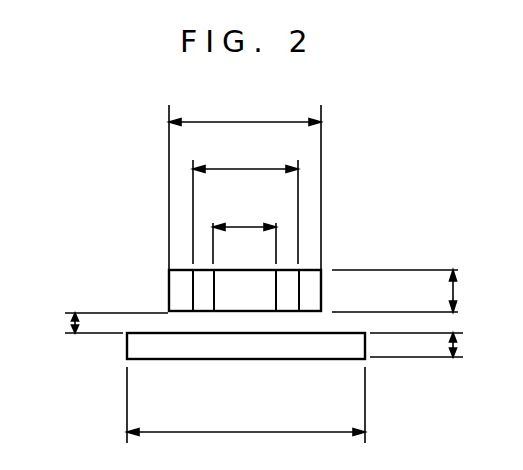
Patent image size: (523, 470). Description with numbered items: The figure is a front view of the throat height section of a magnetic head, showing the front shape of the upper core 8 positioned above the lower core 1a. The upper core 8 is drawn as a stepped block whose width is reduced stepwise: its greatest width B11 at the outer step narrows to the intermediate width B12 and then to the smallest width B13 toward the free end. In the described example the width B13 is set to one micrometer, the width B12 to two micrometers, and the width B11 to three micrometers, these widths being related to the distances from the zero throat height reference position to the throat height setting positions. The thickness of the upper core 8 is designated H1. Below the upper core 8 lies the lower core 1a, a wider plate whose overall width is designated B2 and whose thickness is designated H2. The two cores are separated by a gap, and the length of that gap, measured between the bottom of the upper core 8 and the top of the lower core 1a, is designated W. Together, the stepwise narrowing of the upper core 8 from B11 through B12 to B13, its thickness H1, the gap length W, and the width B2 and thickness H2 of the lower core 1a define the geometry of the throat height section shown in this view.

The upper core 8 is at (308, 281).
The lower core 1a is at (337, 351).
The width of the upper core B11 is at (245, 183).
The width of the upper core B12 is at (245, 205).
The width of the upper core B13 is at (244, 233).
The thickness of the upper core H1 is at (395, 291).
The thickness of the lower core H2 is at (427, 346).
The length of the gap W is at (104, 323).
The width of the lower core B2 is at (246, 405).